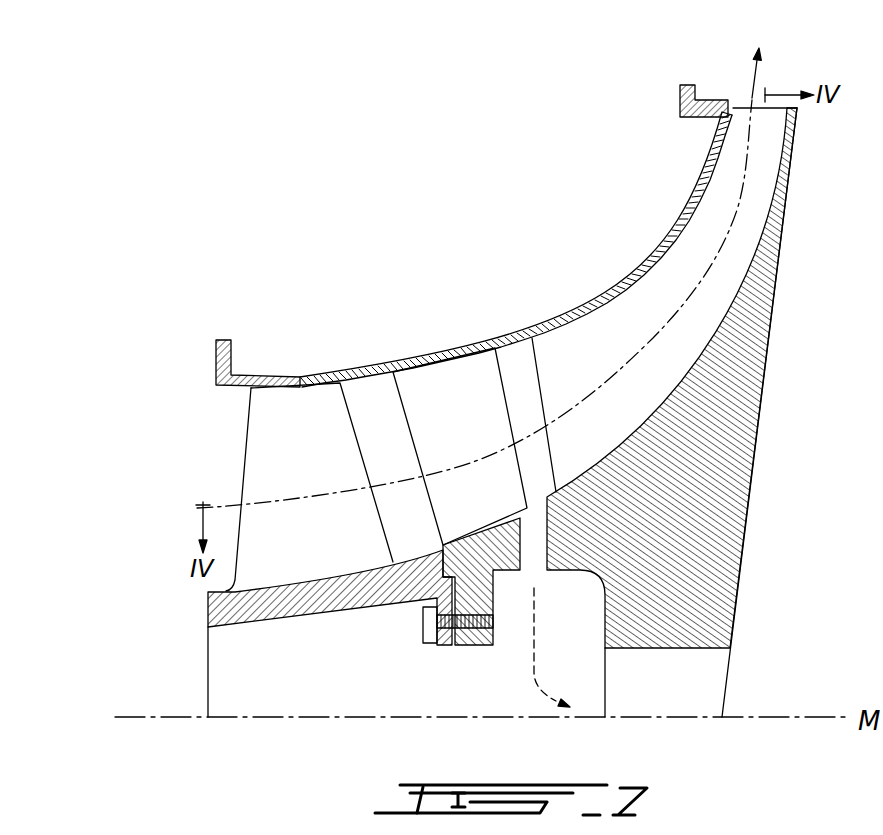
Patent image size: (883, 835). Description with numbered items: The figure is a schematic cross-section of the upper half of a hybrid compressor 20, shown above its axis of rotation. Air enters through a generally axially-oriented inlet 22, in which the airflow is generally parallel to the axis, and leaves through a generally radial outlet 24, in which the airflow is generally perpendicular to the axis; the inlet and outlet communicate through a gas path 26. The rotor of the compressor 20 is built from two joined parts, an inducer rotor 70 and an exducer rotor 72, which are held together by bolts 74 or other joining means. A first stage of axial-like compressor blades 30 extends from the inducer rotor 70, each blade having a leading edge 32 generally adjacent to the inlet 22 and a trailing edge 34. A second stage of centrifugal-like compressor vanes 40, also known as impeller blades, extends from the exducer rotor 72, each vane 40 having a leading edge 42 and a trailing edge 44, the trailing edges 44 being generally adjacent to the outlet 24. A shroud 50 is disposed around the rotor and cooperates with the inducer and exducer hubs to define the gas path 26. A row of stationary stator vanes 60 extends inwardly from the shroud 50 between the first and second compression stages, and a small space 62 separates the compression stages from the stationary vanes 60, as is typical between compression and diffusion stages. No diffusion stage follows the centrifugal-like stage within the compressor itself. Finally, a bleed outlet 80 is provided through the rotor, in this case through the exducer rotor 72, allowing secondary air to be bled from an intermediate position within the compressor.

The hybrid compressor 20 is at (349, 183).
The inlet 22 is at (205, 471).
The outlet 24 is at (776, 41).
The gas path 26 is at (164, 506).
The axial-like compressor blades 30 is at (316, 473).
The leading edge 32 is at (247, 414).
The trailing edge 34 is at (355, 415).
The centrifugal-like compressor vanes 40 is at (603, 369).
The leading edge 42 is at (515, 375).
The trailing edge 44 is at (743, 105).
The shroud 50 is at (290, 378).
The stationary stator vanes 60 is at (479, 439).
The small space 62 is at (386, 423).
The inducer rotor 70 is at (208, 612).
The exducer rotor 72 is at (745, 530).
The bolts 74 is at (422, 620).
The bleed outlet 80 is at (533, 548).